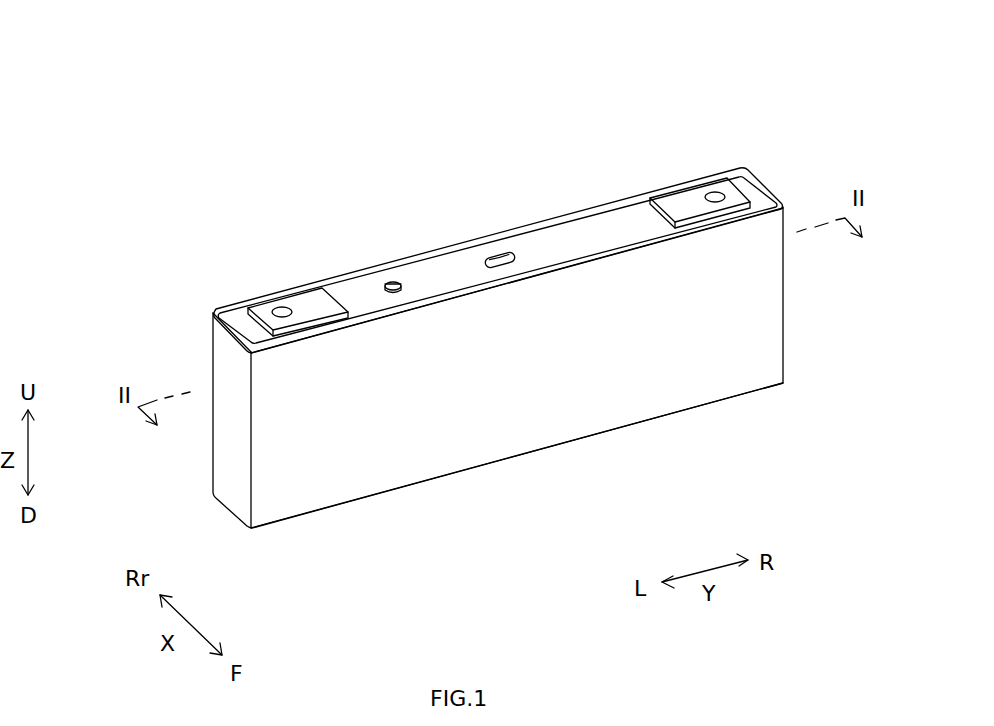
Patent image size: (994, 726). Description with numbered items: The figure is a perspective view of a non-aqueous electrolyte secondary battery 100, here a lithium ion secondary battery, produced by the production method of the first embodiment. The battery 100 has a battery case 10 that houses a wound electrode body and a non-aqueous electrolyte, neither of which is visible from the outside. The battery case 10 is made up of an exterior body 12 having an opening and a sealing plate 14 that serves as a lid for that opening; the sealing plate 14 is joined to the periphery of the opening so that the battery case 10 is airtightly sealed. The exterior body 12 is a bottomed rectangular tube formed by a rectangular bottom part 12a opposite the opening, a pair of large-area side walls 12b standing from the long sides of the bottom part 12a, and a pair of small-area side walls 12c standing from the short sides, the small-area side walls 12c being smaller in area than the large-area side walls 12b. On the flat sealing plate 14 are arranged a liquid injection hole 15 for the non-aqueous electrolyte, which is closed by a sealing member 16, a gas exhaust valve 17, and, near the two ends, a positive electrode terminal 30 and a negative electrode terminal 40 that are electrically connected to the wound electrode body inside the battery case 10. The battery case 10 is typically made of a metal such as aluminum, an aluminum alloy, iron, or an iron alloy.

The non-aqueous electrolyte secondary battery 100 is at (528, 286).
The battery case 10 is at (528, 327).
The exterior body 12 is at (528, 353).
The bottom part 12a is at (474, 468).
The large-area side walls 12b is at (594, 398).
The small-area side walls 12c is at (223, 482).
The sealing plate 14 is at (571, 240).
The liquid injection hole 15 is at (400, 282).
The sealing member 16 is at (393, 283).
The gas exhaust valve 17 is at (498, 250).
The positive electrode terminal 30 is at (281, 310).
The negative electrode terminal 40 is at (716, 192).